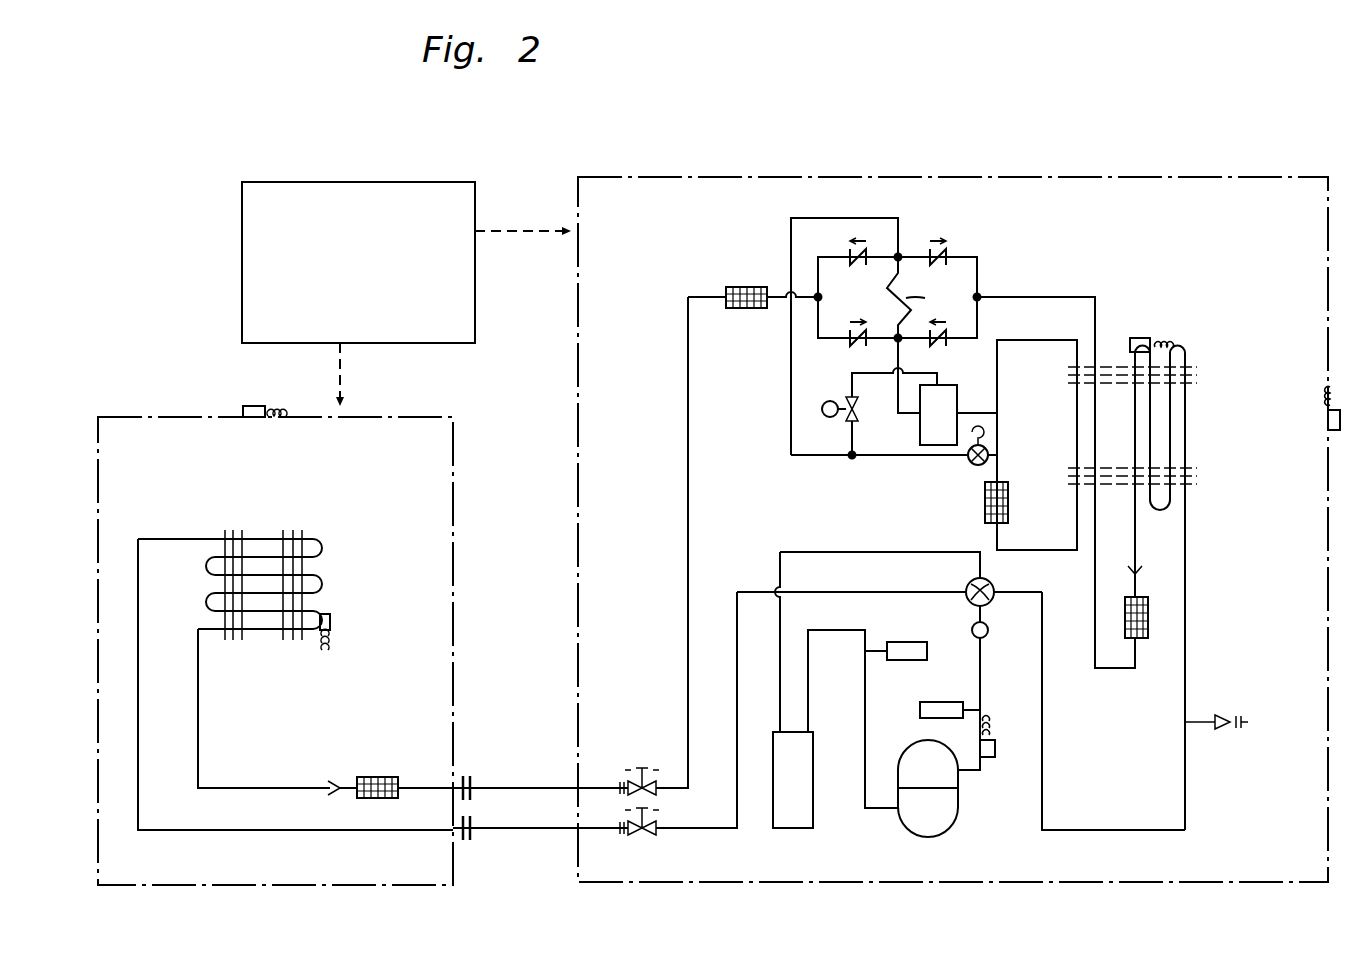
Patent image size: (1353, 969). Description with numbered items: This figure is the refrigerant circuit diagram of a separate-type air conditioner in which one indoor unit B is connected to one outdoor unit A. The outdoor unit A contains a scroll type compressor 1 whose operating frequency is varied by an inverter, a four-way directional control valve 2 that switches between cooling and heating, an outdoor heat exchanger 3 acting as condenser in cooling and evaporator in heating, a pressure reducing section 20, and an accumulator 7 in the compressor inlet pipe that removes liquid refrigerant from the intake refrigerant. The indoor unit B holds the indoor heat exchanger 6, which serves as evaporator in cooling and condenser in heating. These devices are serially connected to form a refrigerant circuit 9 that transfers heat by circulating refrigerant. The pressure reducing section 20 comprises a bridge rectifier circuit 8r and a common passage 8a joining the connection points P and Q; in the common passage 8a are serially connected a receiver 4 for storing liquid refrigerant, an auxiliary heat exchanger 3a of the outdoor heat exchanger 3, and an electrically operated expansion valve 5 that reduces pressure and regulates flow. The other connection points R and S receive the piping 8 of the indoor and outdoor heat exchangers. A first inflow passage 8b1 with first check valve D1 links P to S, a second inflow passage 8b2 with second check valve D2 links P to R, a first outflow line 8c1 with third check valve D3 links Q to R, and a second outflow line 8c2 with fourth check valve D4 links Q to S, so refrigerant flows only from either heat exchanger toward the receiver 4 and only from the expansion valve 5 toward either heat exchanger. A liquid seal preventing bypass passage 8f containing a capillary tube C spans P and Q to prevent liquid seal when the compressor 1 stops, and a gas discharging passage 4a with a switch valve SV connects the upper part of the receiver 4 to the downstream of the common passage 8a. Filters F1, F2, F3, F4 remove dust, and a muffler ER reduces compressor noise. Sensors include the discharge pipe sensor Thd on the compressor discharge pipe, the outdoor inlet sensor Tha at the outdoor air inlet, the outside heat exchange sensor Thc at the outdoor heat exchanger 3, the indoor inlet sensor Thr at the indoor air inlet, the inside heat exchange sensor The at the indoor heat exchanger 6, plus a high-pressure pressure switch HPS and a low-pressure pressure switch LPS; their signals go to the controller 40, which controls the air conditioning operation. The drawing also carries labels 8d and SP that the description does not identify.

The controller 40 is at (360, 182).
The outdoor unit A is at (588, 172).
The indoor unit B is at (378, 414).
The pressure reducing section 20 is at (1080, 204).
The scroll type compressor 1 is at (935, 836).
The four-way directional control valve 2 is at (996, 586).
The outdoor heat exchanger 3 is at (1190, 455).
The auxiliary heat exchanger 3a is at (1095, 345).
The receiver 4 is at (920, 440).
The gas discharging passage 4a is at (857, 440).
The electrically operated expansion valve 5 is at (974, 467).
The indoor heat exchanger 6 is at (322, 534).
The accumulator 7 is at (800, 830).
The piping 8 is at (1140, 830).
The common passage 8a is at (791, 460).
The first inflow passage 8b1 is at (985, 320).
The second inflow passage 8b2 is at (814, 338).
The first outflow line 8c1 is at (806, 270).
The second outflow line 8c2 is at (972, 251).
The discharge pipe 8d is at (968, 772).
The liquid seal preventing bypass passage 8f is at (892, 274).
The bridge rectifier circuit 8r is at (925, 236).
The refrigerant circuit 9 is at (1192, 785).
The capillary tube C is at (926, 298).
The first check valve D1 is at (942, 347).
The second check valve D2 is at (855, 344).
The third check valve D3 is at (848, 255).
The fourth check valve D4 is at (950, 250).
The muffler ER is at (989, 632).
The filter F1 is at (1150, 617).
The filter F2 is at (1005, 505).
The filter F3 is at (735, 287).
The filter F4 is at (375, 777).
The high-pressure pressure switch HPS is at (920, 710).
The low-pressure pressure switch LPS is at (902, 633).
The upstream connection point P is at (891, 413).
The downstream connection point Q is at (902, 255).
The connection point R is at (813, 300).
The connection point S is at (979, 294).
The service port SP is at (1224, 716).
The switch valve SV is at (830, 418).
The outdoor inlet sensor Tha is at (1327, 443).
The outside heat exchange sensor Thc is at (1148, 338).
The discharge pipe sensor Thd is at (1000, 752).
The inside heat exchange sensor The is at (333, 626).
The indoor inlet sensor Thr is at (250, 406).